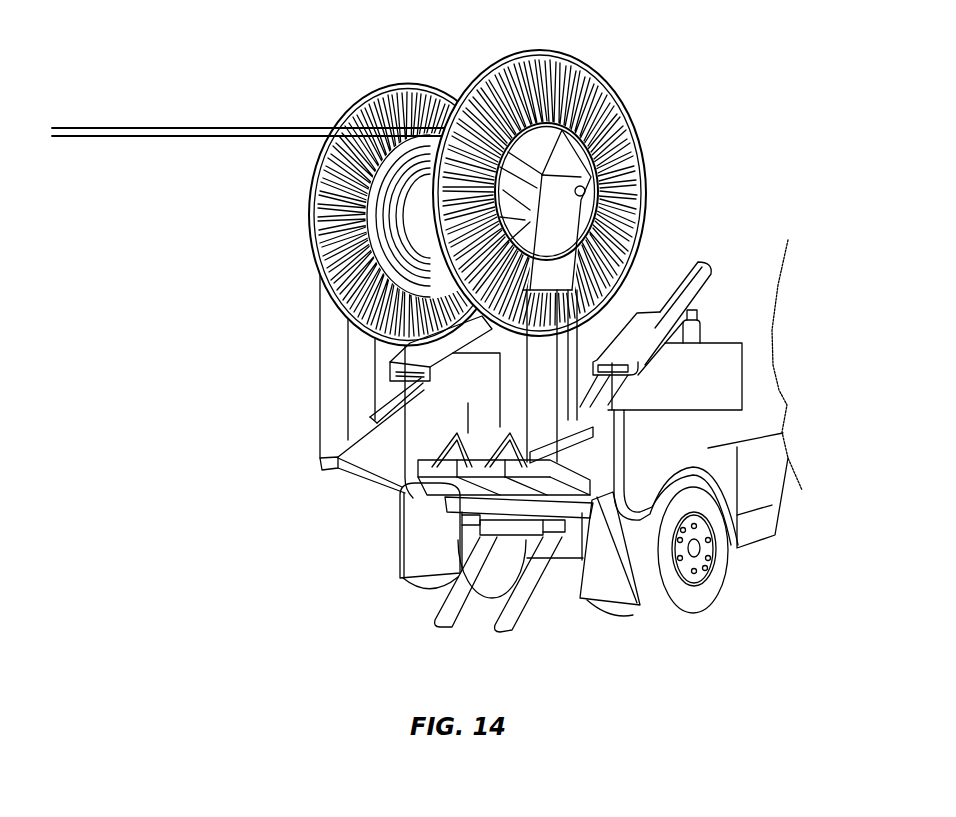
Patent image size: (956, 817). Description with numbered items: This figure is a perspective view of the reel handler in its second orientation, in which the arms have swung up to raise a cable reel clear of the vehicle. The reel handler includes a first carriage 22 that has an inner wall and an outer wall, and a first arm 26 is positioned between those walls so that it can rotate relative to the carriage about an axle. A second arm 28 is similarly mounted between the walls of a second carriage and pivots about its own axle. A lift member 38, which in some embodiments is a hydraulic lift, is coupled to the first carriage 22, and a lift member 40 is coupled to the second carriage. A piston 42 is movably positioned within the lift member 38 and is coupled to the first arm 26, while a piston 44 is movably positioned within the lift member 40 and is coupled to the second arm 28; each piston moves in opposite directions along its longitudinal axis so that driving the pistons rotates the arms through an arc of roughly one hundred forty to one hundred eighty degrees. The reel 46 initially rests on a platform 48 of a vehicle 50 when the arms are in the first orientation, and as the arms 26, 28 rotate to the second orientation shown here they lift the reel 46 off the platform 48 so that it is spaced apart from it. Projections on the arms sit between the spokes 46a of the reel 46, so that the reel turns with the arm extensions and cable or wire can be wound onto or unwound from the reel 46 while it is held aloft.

The first carriage 22 is at (657, 473).
The first arm 26 is at (540, 345).
The second arm 28 is at (336, 412).
The lift member 38 is at (665, 360).
The lift member 40 is at (414, 361).
The piston 42 is at (712, 280).
The piston 44 is at (392, 397).
The reel 46 is at (634, 76).
The spokes 46a is at (509, 58).
The platform 48 is at (733, 425).
The vehicle 50 is at (806, 516).